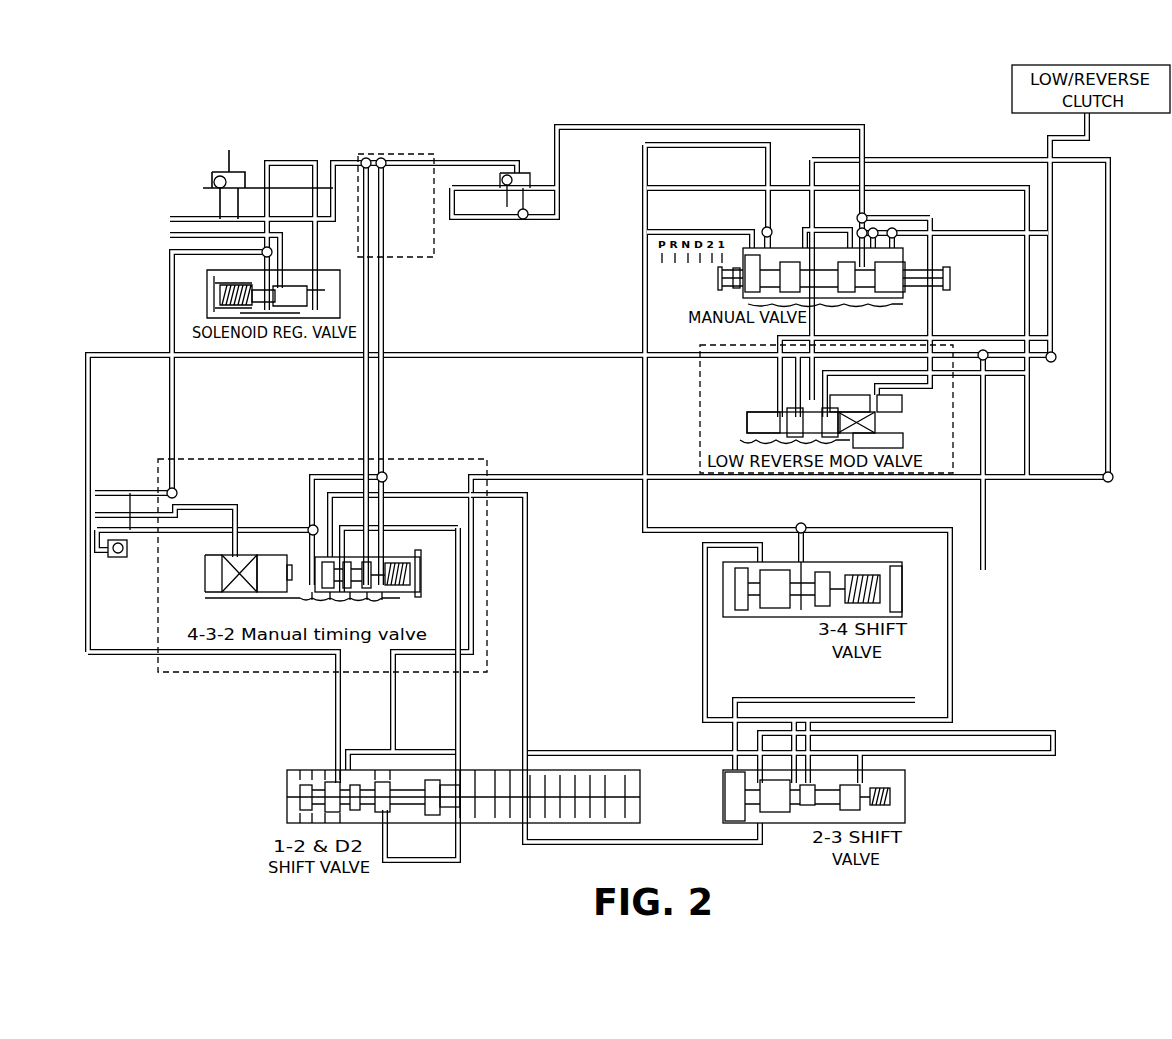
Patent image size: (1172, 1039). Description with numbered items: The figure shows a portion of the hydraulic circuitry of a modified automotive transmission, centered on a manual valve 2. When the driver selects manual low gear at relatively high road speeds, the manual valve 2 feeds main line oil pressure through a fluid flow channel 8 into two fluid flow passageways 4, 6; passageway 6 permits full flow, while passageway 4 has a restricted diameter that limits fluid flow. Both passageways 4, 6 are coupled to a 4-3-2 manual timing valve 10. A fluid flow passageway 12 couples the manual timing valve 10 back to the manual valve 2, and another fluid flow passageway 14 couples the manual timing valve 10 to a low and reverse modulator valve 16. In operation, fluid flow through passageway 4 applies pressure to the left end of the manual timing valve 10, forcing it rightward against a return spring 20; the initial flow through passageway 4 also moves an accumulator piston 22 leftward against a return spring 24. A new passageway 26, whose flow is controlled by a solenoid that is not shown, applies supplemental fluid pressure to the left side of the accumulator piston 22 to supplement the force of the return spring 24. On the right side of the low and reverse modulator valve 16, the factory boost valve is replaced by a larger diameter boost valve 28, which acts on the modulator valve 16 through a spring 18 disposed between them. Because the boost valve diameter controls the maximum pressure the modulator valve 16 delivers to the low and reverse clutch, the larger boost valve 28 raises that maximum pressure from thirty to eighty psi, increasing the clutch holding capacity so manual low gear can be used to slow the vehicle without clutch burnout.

The manual valve 2 is at (825, 298).
The fluid flow passageway 4 is at (369, 190).
The fluid flow passageway 6 is at (370, 243).
The fluid flow channel 8 is at (703, 126).
The 4-3-2 manual timing valve 10 is at (382, 584).
The fluid flow passageway 12 is at (461, 697).
The fluid flow passageway 14 is at (527, 537).
The low and reverse modulator valve 16 is at (745, 427).
The spring 18 is at (858, 412).
The return spring 20 is at (410, 574).
The accumulator piston 22 is at (270, 593).
The return spring 24 is at (240, 593).
The passageway 26 is at (198, 506).
The boost valve 28 is at (885, 422).